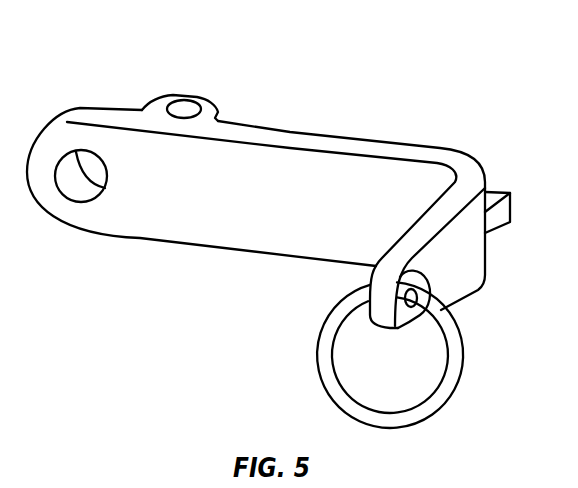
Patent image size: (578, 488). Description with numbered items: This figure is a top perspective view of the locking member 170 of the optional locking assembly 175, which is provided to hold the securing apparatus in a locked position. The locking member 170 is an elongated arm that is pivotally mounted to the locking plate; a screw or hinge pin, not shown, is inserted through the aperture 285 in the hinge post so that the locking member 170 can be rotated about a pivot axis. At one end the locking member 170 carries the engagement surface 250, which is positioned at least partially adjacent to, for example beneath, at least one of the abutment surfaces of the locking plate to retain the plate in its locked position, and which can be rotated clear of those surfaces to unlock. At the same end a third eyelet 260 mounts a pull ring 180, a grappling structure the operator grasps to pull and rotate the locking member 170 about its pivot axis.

The locking assembly 175 is at (110, 56).
The locking member 170 is at (143, 240).
The aperture 285 is at (184, 106).
The engagement surface 250 is at (488, 191).
The third eyelet 260 is at (445, 292).
The pull ring 180 is at (448, 392).